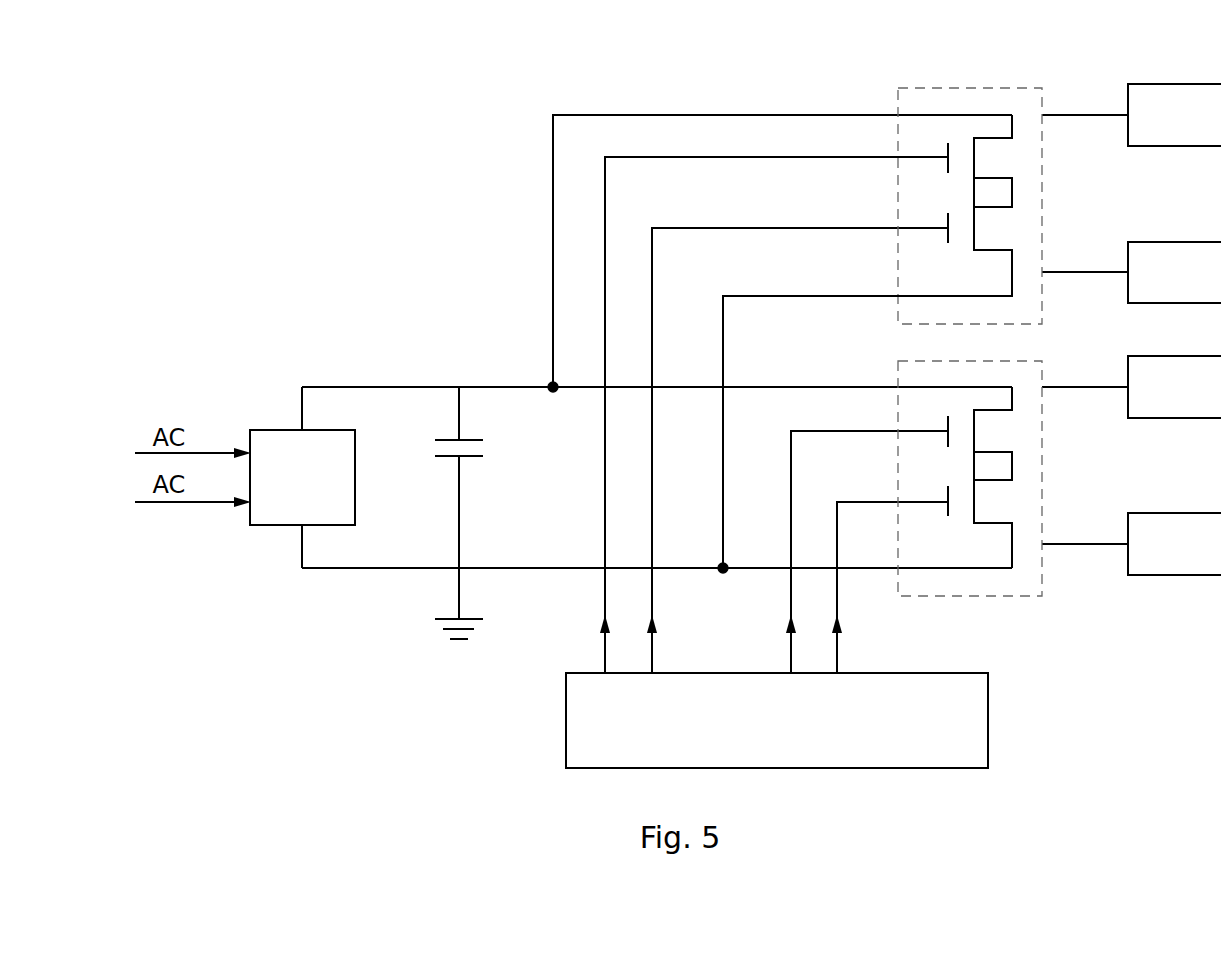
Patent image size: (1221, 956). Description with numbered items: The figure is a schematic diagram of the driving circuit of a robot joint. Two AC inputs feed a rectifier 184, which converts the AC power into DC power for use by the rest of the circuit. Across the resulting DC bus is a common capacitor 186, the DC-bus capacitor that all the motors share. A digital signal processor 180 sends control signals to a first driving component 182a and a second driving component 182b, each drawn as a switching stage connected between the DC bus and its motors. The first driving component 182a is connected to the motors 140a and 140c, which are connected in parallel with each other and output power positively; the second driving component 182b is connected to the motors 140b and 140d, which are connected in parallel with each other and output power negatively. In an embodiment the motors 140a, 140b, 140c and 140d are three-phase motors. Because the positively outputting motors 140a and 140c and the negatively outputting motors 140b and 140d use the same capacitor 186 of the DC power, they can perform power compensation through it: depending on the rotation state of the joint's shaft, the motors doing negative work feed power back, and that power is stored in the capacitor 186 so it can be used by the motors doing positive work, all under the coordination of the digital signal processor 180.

The digital signal processor 180 is at (754, 734).
The first driving component 182a is at (897, 98).
The second driving component 182b is at (1042, 585).
The rectifier 184 is at (276, 493).
The capacitor 186 is at (433, 444).
The motor 140a is at (1154, 131).
The motor 140b is at (1154, 403).
The motor 140c is at (1154, 288).
The motor 140d is at (1154, 560).